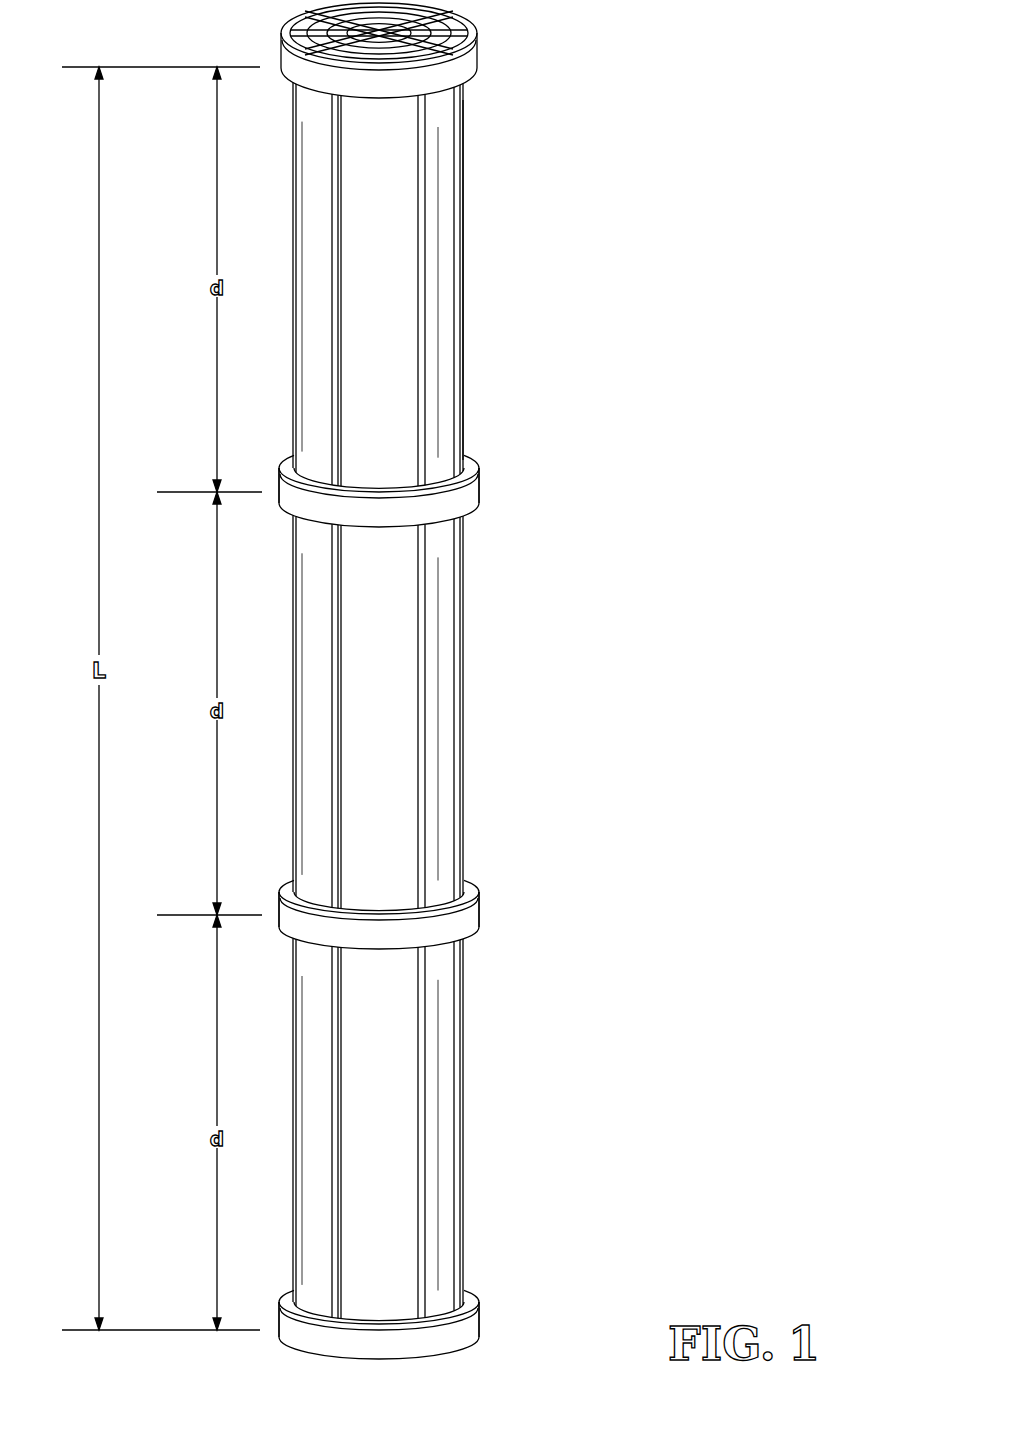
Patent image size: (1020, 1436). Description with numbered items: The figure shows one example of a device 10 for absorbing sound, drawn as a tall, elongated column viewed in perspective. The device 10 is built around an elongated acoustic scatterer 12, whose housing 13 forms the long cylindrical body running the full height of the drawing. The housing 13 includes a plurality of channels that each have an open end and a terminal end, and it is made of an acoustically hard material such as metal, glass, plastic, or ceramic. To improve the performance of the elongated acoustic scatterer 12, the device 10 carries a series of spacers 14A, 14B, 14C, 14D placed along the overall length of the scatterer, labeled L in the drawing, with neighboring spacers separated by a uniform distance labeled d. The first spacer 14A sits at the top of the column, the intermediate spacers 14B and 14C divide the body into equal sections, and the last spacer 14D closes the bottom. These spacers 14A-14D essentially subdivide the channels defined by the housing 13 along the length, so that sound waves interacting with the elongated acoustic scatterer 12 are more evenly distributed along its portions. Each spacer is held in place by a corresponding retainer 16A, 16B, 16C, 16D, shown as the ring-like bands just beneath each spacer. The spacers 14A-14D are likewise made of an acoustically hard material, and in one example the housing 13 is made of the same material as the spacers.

The device 10 is at (525, 688).
The elongated acoustic scatterer 12 is at (447, 220).
The housing 13 is at (465, 305).
The spacer 14A is at (472, 18).
The retainer 16A is at (470, 62).
The spacer 14B is at (475, 457).
The retainer 16B is at (473, 490).
The spacer 14C is at (475, 880).
The retainer 16C is at (473, 915).
The spacer 14D is at (475, 1290).
The retainer 16D is at (473, 1325).